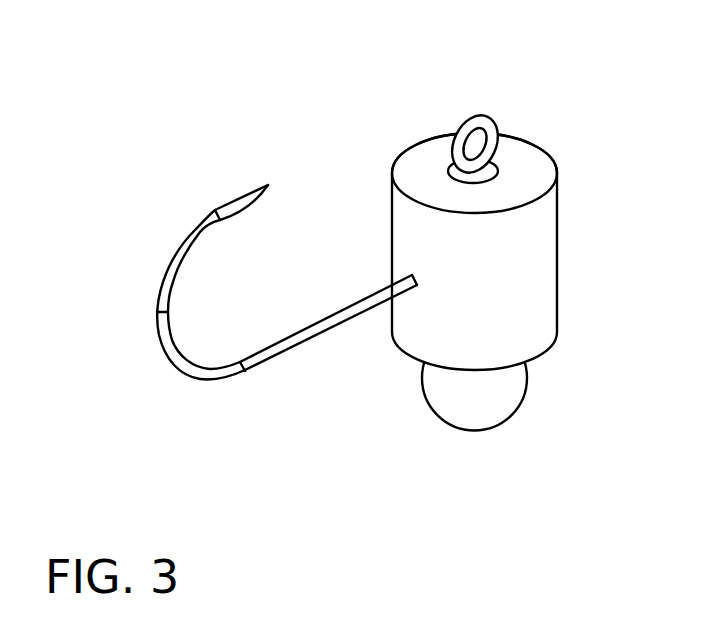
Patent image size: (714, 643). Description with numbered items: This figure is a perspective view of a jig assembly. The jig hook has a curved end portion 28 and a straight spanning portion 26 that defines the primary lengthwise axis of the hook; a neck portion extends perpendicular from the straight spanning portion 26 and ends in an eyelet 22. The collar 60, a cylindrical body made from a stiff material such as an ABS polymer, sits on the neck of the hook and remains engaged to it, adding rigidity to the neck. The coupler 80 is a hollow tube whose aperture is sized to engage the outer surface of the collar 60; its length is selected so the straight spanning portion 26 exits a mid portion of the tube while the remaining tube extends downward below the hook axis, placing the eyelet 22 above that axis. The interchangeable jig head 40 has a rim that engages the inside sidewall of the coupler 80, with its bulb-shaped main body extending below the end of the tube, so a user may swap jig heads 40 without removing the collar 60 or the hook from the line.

The eyelet 22 is at (473, 125).
The straight spanning portion 26 is at (310, 338).
The curved end portion 28 is at (167, 277).
The jig head 40 is at (470, 407).
The collar 60 is at (455, 175).
The coupler 80 is at (522, 278).